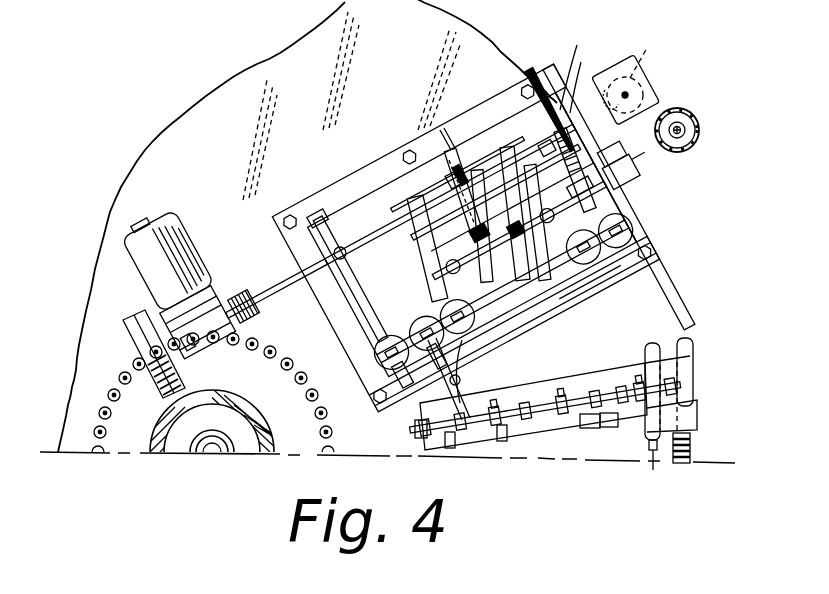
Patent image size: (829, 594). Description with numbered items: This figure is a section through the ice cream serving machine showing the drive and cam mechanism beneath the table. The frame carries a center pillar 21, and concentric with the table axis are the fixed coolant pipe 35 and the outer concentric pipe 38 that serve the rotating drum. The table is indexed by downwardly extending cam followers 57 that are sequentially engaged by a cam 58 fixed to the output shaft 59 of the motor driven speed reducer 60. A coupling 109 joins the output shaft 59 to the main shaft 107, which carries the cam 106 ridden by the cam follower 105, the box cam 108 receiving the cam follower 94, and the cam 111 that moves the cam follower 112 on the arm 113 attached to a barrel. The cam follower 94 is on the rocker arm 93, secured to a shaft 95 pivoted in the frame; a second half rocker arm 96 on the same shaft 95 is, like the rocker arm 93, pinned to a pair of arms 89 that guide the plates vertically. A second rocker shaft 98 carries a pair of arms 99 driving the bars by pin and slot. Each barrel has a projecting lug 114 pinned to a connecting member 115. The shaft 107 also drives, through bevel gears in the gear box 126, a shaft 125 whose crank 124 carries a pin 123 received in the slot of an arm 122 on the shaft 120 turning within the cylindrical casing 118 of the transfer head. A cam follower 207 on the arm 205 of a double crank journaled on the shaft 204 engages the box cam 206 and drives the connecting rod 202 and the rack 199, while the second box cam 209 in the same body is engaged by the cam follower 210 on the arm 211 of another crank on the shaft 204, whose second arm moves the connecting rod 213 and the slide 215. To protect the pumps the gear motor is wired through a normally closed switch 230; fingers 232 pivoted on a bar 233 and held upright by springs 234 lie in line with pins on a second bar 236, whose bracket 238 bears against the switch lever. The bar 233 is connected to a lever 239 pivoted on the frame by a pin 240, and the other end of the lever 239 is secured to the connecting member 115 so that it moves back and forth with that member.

The center pillar 21 is at (266, 430).
The pipe 35 is at (215, 458).
The outer concentric pipe 38 is at (226, 438).
The cam followers 57 is at (119, 378).
The cam 58 is at (128, 338).
The output shaft 59 is at (232, 292).
The motor driven speed reducer 60 is at (184, 314).
The arms 89 is at (560, 300).
The rocker arm 93 is at (525, 250).
The cam follower 94 is at (470, 168).
The shaft 95 is at (510, 212).
The second half rocker arm 96 is at (510, 332).
The second rocker shaft 98 is at (442, 218).
The arms 99 is at (447, 307).
The cam follower 105 is at (442, 187).
The cam 106 is at (455, 183).
The shaft 107 is at (366, 230).
The box cam 108 is at (447, 130).
The coupling 109 is at (275, 298).
The cam 111 is at (322, 233).
The cam follower 112 is at (347, 254).
The arm 113 is at (362, 292).
The projecting lug 114 is at (372, 386).
The connecting member 115 is at (605, 288).
The cylindrical casing 118 is at (694, 140).
The shaft 120 is at (686, 130).
The arm 122 is at (666, 124).
The pin 123 is at (640, 57).
The crank 124 is at (653, 83).
The shaft 125 is at (627, 94).
The gear box 126 is at (612, 63).
The rack 199 is at (700, 443).
The connecting rod 202 is at (672, 280).
The shaft 204 is at (628, 185).
The arm 205 is at (605, 152).
The box cam 206 is at (579, 69).
The cam follower 207 is at (594, 80).
The second box cam 209 is at (551, 86).
The cam follower 210 is at (546, 148).
The arm 211 is at (568, 178).
The connecting rod 213 is at (640, 362).
The slide 215 is at (656, 465).
The normally closed switch 230 is at (598, 420).
The fingers 232 is at (516, 403).
The bar 233 is at (572, 418).
The springs 234 is at (440, 450).
The second bar 236 is at (518, 400).
The bracket 238 is at (584, 378).
The lever 239 is at (470, 395).
The pin 240 is at (412, 420).